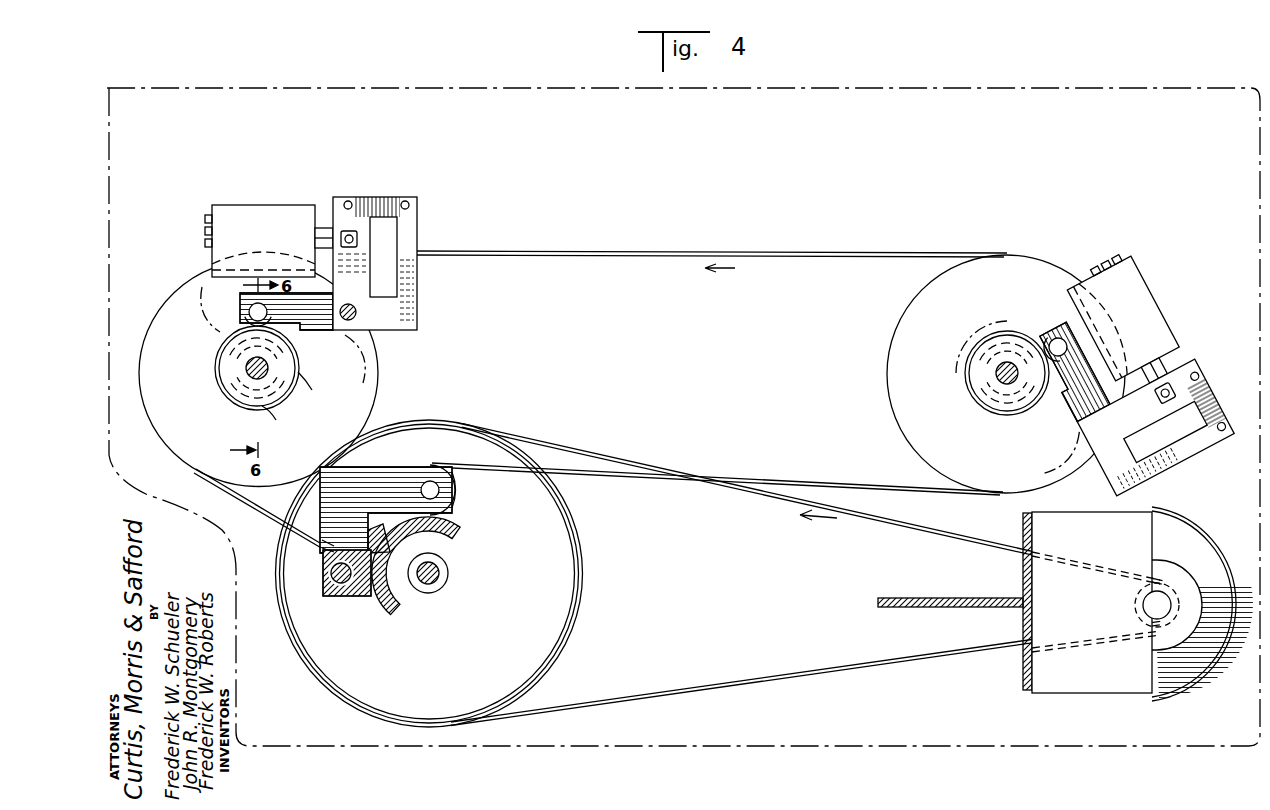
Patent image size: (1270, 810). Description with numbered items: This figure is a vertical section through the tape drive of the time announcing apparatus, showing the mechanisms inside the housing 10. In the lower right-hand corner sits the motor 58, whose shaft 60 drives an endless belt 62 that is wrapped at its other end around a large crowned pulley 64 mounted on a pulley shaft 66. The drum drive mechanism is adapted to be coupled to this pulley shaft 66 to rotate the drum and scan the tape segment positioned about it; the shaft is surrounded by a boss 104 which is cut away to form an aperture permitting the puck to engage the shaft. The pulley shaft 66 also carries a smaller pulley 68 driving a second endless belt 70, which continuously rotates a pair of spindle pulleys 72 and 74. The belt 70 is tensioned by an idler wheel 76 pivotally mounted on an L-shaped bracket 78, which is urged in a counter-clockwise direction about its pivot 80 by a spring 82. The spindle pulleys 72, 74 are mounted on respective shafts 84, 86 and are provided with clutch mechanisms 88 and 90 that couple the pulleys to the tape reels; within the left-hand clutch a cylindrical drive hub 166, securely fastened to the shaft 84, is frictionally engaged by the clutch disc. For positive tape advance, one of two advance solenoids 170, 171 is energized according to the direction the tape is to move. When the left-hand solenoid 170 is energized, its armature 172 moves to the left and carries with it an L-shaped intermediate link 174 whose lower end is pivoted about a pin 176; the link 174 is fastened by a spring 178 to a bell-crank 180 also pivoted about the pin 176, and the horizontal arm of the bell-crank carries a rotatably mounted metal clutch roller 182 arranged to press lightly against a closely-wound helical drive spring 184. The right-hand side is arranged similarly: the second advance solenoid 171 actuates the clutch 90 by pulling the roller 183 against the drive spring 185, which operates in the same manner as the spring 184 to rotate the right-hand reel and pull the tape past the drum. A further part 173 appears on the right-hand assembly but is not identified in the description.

The housing 10 is at (925, 88).
The motor 58 is at (1204, 540).
The shaft 60 is at (1142, 606).
The endless belt 62 is at (917, 528).
The large crowned pulley 64 is at (549, 630).
The pulley shaft 66 is at (431, 586).
The smaller pulley 68 is at (446, 574).
The second endless belt 70 is at (599, 262).
The spindle pulley 72 is at (166, 314).
The spindle pulley 74 is at (902, 326).
The idler wheel 76 is at (431, 466).
The L-shaped bracket 78 is at (357, 482).
The pivot 80 is at (342, 592).
The spring 82 is at (322, 548).
The shaft 84 is at (250, 378).
The shaft 86 is at (1000, 390).
The clutch mechanism 88 is at (232, 329).
The clutch mechanism 90 is at (1012, 330).
The boss 104 is at (378, 600).
The cylindrical drive hub 166 is at (284, 420).
The advance solenoid 170 is at (232, 212).
The advance solenoid 171 is at (1134, 290).
The armature 172 is at (324, 226).
The mounting bracket 173 is at (1182, 358).
The L-shaped intermediate link 174 is at (350, 200).
The pin 176 is at (350, 322).
The spring 178 is at (374, 198).
The bell-crank 180 is at (412, 276).
The metal clutch roller 182 is at (286, 324).
The roller 183 is at (1050, 342).
The helical drive spring 184 is at (316, 392).
The drive spring 185 is at (1062, 400).